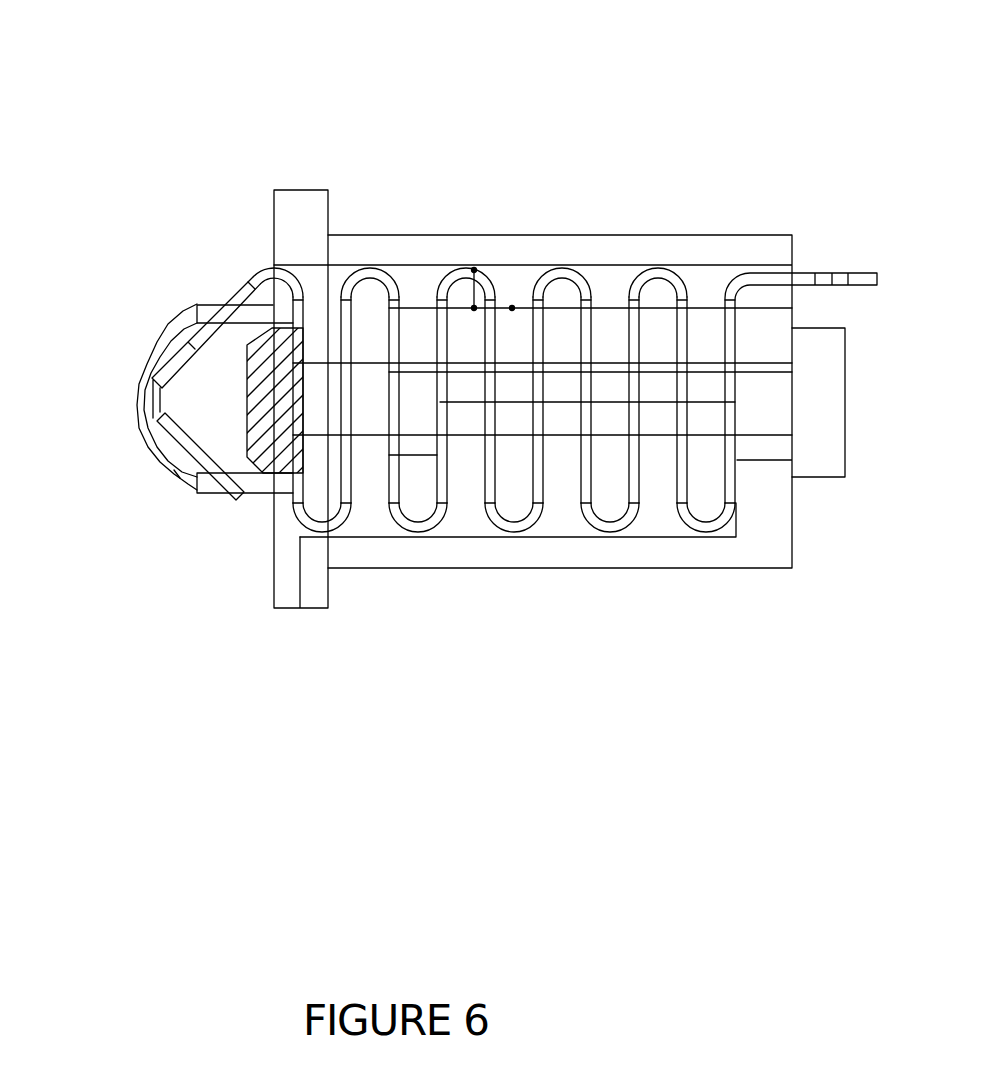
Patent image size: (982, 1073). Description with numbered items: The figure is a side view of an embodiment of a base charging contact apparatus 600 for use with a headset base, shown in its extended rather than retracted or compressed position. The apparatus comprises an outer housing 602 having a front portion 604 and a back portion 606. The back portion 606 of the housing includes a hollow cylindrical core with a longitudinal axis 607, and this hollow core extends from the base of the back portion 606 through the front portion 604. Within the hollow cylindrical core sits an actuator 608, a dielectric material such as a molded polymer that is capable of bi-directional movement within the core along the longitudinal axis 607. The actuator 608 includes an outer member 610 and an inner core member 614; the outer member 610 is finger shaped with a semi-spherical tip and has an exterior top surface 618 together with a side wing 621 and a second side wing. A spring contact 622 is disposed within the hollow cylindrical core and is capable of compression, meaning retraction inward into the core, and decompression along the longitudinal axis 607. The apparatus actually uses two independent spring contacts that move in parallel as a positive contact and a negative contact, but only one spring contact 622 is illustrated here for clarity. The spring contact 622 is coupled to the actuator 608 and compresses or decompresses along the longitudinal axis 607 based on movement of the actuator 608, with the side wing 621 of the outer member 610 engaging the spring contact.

The base charging contact apparatus 600 is at (493, 59).
The outer housing 602 is at (368, 582).
The front portion 604 is at (258, 572).
The back portion 606 is at (653, 570).
The longitudinal axis 607 is at (603, 190).
The actuator 608 is at (205, 288).
The outer member 610 is at (257, 503).
The inner core member 614 is at (750, 441).
The exterior top surface 618 is at (138, 365).
The side wing 621 is at (237, 384).
The spring contact 622 is at (238, 279).